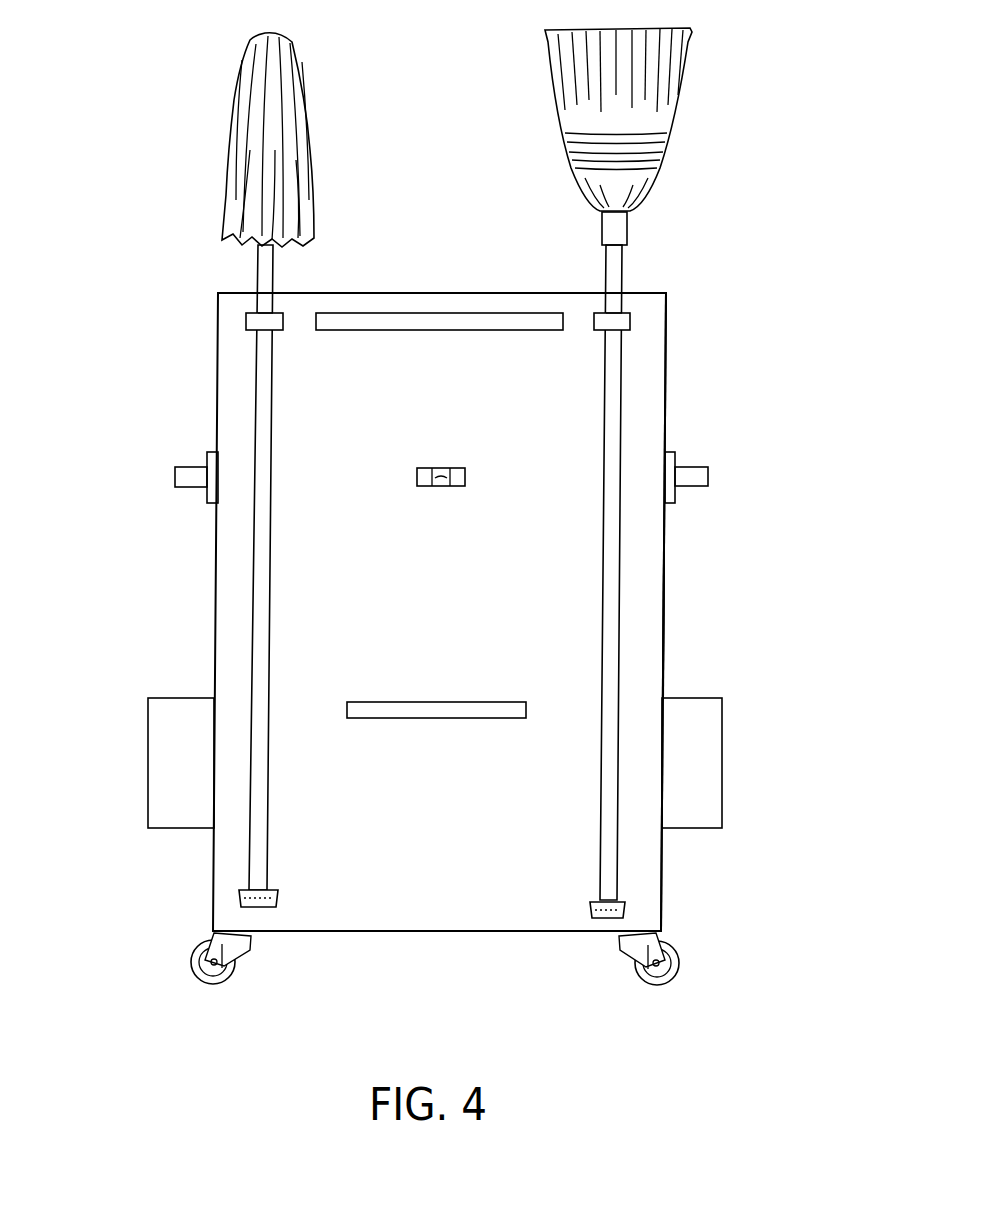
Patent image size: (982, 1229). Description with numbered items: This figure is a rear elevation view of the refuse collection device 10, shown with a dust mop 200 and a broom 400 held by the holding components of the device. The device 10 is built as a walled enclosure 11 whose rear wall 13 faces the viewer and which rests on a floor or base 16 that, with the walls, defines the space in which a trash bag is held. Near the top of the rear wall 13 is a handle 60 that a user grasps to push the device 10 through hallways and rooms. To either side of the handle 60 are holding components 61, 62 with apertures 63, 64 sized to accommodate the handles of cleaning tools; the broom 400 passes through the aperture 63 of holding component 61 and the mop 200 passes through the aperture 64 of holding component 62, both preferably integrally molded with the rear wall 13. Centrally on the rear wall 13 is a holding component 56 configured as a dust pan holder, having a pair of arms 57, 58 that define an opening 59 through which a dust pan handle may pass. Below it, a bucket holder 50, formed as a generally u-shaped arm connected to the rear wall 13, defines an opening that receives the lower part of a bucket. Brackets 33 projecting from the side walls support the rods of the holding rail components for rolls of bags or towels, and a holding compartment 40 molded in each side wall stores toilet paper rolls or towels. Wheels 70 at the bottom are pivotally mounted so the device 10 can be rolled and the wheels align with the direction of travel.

The refuse collection device 10 is at (738, 441).
The walled enclosure 11 is at (666, 578).
The rear wall 13 is at (643, 648).
The floor or base 16 is at (523, 932).
The brackets 33 is at (188, 467).
The holding compartment 40 is at (173, 777).
The bucket holder 50 is at (431, 727).
The holding component 56 is at (405, 500).
The arm 57 is at (421, 487).
The arm 58 is at (456, 487).
The opening 59 is at (440, 478).
The handle 60 is at (423, 312).
The holding component 61 is at (630, 320).
The holding component 62 is at (250, 322).
The aperture 63 is at (622, 316).
The aperture 64 is at (256, 318).
The wheels 70 is at (205, 978).
The dust mop 200 is at (258, 550).
The broom 400 is at (608, 537).